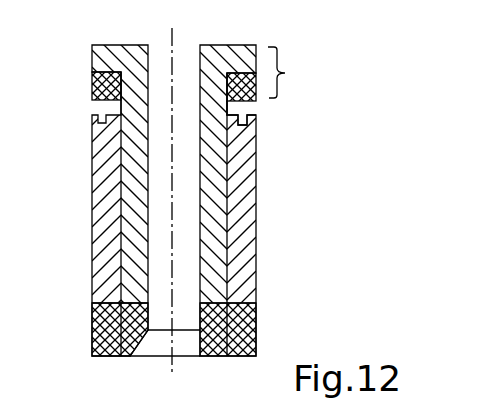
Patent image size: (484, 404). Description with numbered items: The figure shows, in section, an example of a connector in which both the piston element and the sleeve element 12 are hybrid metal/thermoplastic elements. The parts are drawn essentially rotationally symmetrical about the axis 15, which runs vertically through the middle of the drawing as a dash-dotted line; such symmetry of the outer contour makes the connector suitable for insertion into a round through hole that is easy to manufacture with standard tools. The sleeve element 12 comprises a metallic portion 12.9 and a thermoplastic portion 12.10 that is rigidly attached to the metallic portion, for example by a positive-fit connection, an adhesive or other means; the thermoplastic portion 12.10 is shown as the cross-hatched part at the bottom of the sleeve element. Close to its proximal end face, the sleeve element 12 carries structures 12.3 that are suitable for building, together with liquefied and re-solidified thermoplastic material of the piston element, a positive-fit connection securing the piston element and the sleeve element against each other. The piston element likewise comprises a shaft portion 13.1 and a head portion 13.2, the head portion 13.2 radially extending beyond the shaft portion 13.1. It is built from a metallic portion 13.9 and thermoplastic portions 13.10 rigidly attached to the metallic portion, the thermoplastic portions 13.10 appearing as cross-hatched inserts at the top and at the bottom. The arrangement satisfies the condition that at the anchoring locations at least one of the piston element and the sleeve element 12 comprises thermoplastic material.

The sleeve element 12 is at (256, 208).
The structures 12.3 is at (285, 114).
The metallic portion of the sleeve element 12.9 is at (238, 173).
The thermoplastic portion of the sleeve element 12.10 is at (103, 324).
The shaft portion 13.1 is at (302, 72).
The head portion 13.2 is at (138, 167).
The metallic portion of the piston element 13.9 is at (208, 243).
The thermoplastic portion of the piston element 13.10 is at (108, 85).
The axis 15 is at (169, 367).